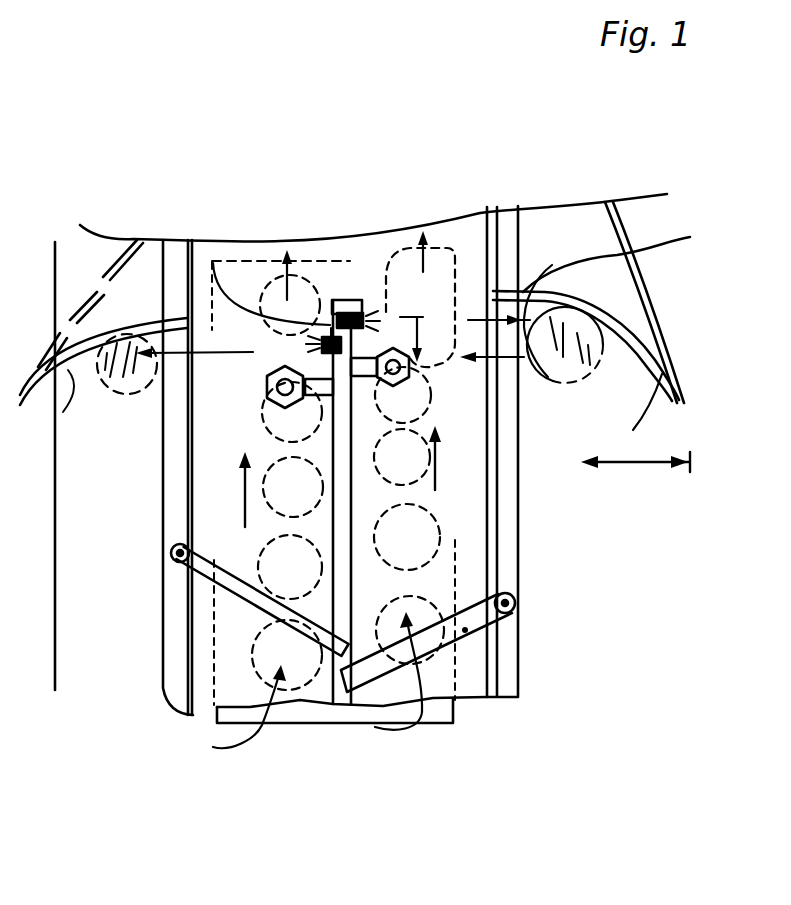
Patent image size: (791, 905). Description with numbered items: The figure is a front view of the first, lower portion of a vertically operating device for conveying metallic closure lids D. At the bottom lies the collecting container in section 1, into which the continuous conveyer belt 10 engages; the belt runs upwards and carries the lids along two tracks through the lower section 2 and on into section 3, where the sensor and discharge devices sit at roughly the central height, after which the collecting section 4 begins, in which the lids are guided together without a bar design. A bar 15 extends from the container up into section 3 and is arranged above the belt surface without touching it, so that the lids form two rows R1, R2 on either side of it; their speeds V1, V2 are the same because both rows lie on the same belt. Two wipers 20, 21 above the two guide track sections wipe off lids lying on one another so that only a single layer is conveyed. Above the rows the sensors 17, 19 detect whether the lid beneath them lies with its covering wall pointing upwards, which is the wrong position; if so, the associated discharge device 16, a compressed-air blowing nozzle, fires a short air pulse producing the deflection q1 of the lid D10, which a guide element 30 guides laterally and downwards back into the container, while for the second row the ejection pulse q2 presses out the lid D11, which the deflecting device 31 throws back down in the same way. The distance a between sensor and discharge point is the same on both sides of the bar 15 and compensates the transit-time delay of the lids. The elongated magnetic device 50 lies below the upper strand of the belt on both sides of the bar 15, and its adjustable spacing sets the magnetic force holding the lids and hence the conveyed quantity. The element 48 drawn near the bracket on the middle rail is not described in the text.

The section of the conveyer device 1 is at (535, 728).
The lower section 2 is at (690, 508).
The section of the sensor and discharge device 3 is at (690, 235).
The collecting section 4 is at (527, 128).
The continuous conveyer belt 10 is at (455, 229).
The bar 15 is at (347, 495).
The discharge device 16 is at (213, 263).
The sensor 17 is at (280, 410).
The sensor 19 is at (397, 385).
The wiper 20 is at (230, 594).
The wiper 21 is at (465, 632).
The guide element 30 is at (120, 477).
The deflecting device 31 is at (640, 416).
The sensor 48 is at (358, 312).
The magnetic device 50 is at (247, 263).
The closure lids D is at (307, 290).
The lid D10 is at (120, 393).
The lid D11 is at (612, 352).
The deflection q1 is at (194, 369).
The ejection pulse q2 is at (520, 305).
The speed V1 is at (228, 489).
The speed V2 is at (450, 462).
The row of closure lids R1 is at (245, 731).
The row of closure lids R2 is at (387, 690).
The distance a is at (465, 338).